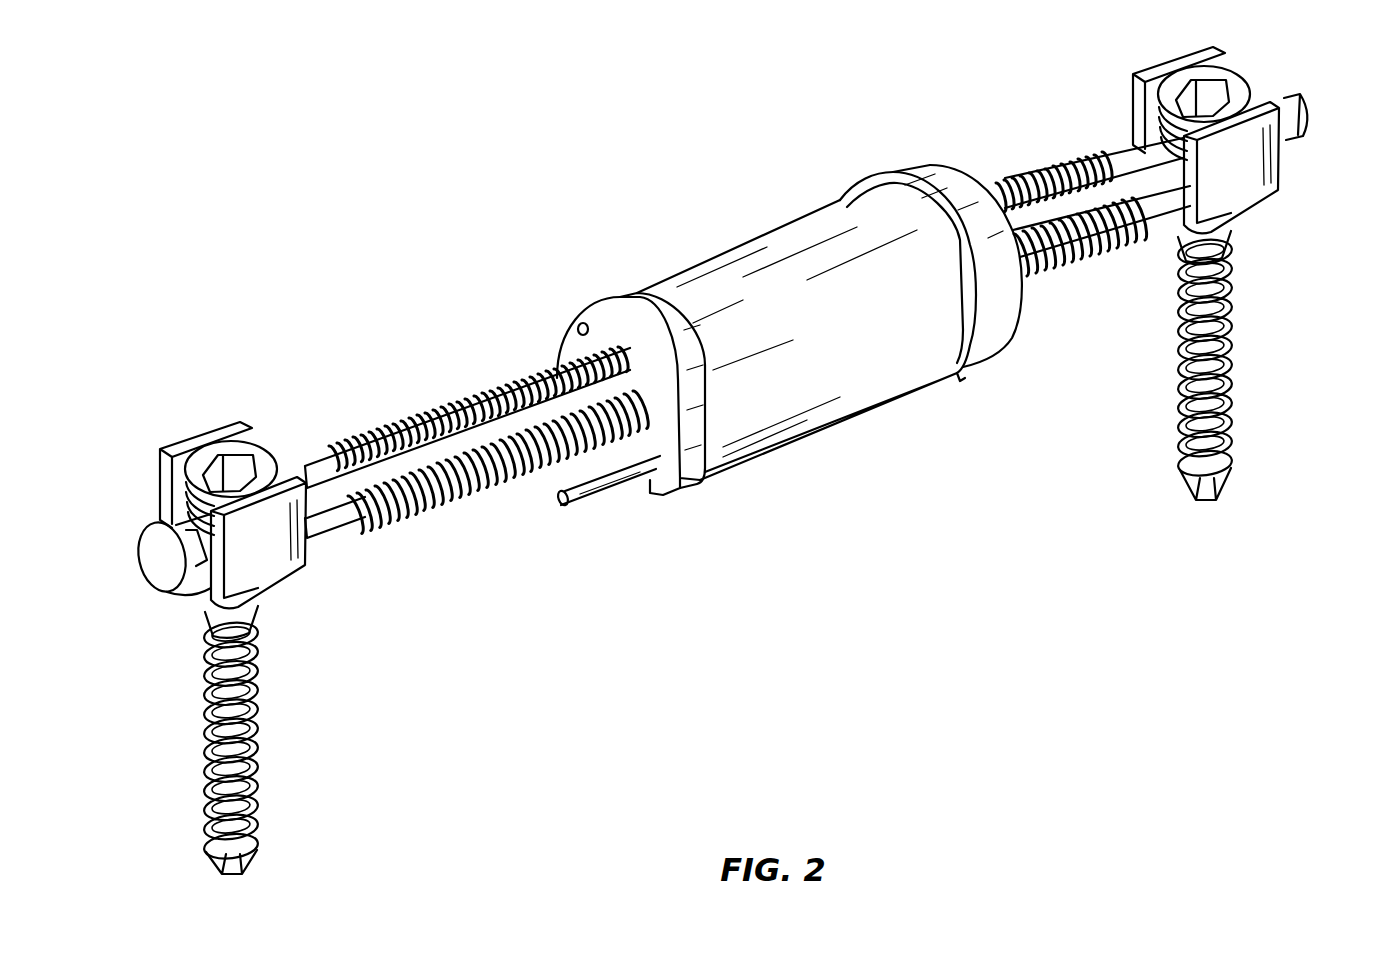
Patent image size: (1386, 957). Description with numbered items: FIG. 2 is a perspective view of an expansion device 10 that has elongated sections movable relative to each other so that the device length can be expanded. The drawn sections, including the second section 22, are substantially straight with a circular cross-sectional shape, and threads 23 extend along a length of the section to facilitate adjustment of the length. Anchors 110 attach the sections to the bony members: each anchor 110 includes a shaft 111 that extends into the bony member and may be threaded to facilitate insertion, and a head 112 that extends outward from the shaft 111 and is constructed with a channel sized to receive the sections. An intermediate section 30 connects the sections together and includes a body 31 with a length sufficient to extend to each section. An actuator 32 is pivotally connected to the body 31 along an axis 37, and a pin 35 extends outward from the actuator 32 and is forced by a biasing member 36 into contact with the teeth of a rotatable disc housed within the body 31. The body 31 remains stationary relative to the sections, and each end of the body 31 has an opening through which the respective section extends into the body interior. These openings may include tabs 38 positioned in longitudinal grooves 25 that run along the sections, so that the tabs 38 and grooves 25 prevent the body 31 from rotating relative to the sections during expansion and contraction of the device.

The expansion device 10 is at (480, 158).
The second section 22 is at (1158, 205).
The threads 23 is at (470, 490).
The longitudinal grooves 25 is at (383, 472).
The intermediate section 30 is at (788, 168).
The body 31 is at (935, 176).
The actuator 32 is at (793, 283).
The pin 35 is at (603, 490).
The biasing member 36 is at (832, 440).
The axis 37 is at (578, 328).
The tabs 38 is at (560, 362).
The anchors 110 is at (140, 660).
The shaft 111 is at (250, 735).
The head 112 is at (250, 548).